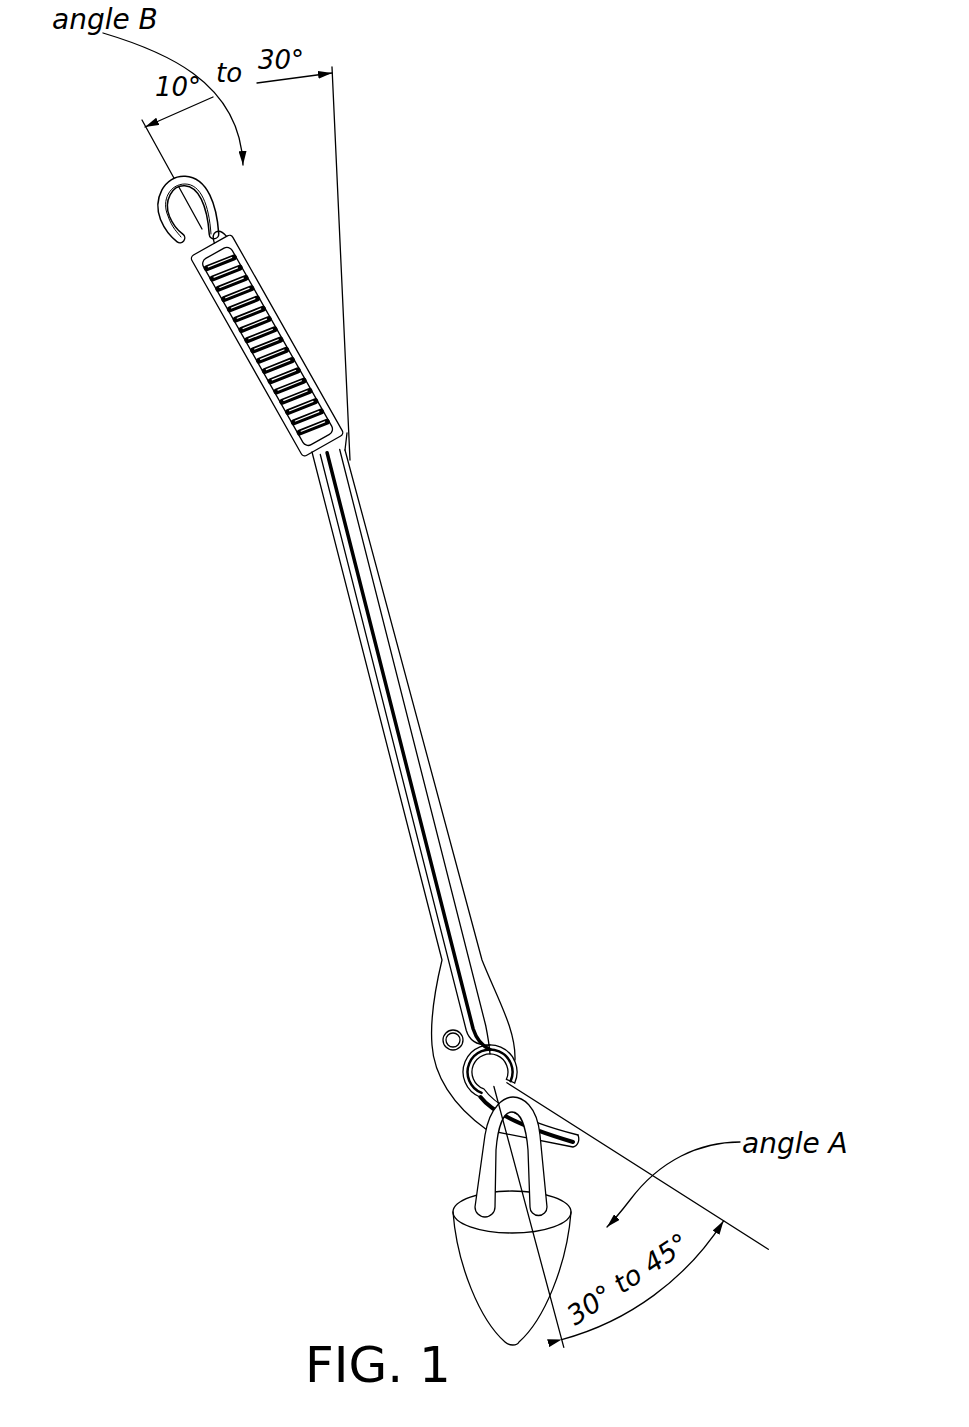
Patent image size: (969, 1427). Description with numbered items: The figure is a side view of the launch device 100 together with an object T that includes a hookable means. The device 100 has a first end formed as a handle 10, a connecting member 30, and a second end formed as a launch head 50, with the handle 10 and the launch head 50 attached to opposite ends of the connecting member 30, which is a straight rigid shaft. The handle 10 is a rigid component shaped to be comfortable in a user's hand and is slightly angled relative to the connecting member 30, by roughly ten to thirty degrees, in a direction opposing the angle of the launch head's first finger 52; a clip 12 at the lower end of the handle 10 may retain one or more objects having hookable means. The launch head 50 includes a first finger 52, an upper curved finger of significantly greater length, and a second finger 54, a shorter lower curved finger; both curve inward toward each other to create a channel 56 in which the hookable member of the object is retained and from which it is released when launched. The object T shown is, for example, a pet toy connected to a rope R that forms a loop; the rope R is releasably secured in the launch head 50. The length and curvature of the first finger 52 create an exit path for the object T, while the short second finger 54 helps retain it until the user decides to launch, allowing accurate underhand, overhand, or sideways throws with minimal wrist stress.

The handle 10 is at (242, 346).
The clip 12 is at (214, 203).
The launch device 100 is at (318, 583).
The connecting member 30 is at (398, 606).
The launch head 50 is at (453, 1010).
The second finger 54 is at (520, 1062).
The channel 56 is at (483, 1067).
The first finger 52 is at (487, 1162).
The rope R is at (467, 1195).
The object T is at (497, 1276).